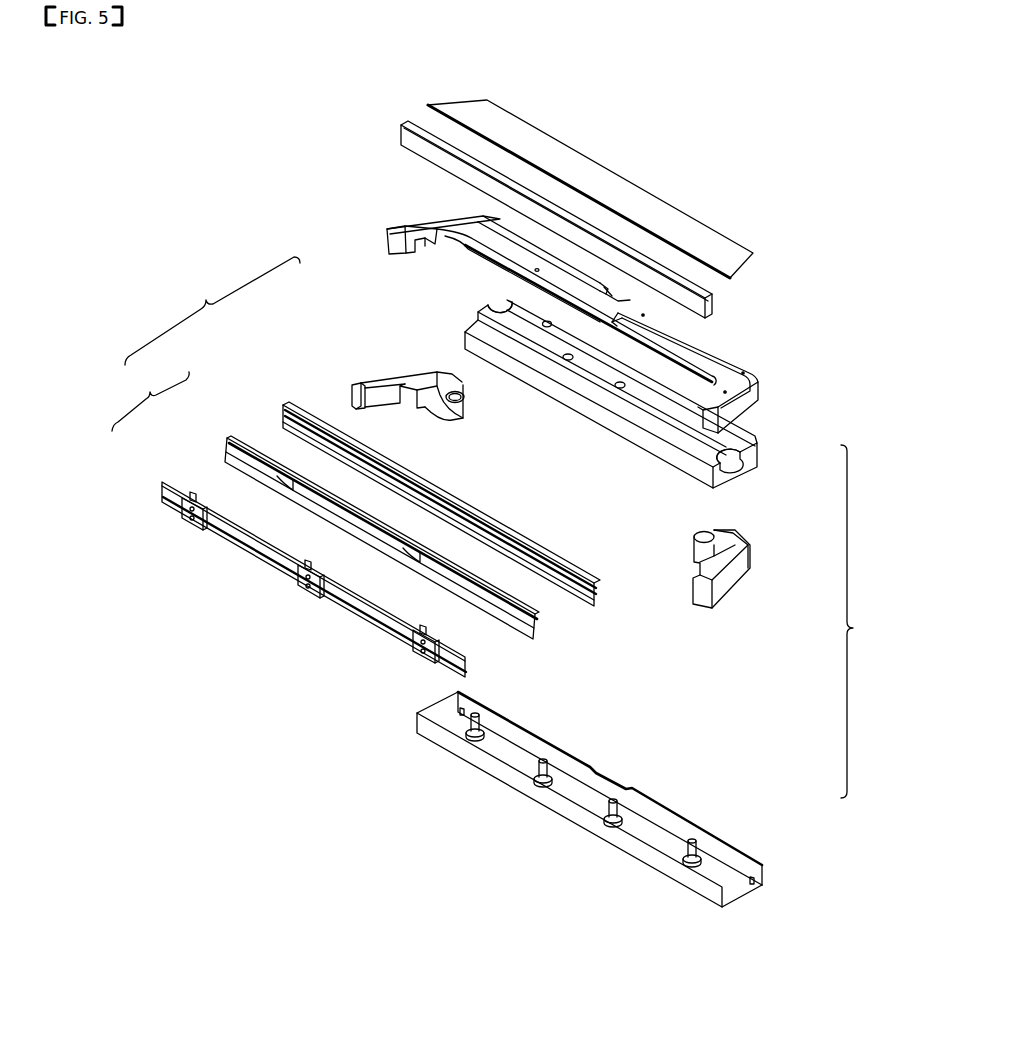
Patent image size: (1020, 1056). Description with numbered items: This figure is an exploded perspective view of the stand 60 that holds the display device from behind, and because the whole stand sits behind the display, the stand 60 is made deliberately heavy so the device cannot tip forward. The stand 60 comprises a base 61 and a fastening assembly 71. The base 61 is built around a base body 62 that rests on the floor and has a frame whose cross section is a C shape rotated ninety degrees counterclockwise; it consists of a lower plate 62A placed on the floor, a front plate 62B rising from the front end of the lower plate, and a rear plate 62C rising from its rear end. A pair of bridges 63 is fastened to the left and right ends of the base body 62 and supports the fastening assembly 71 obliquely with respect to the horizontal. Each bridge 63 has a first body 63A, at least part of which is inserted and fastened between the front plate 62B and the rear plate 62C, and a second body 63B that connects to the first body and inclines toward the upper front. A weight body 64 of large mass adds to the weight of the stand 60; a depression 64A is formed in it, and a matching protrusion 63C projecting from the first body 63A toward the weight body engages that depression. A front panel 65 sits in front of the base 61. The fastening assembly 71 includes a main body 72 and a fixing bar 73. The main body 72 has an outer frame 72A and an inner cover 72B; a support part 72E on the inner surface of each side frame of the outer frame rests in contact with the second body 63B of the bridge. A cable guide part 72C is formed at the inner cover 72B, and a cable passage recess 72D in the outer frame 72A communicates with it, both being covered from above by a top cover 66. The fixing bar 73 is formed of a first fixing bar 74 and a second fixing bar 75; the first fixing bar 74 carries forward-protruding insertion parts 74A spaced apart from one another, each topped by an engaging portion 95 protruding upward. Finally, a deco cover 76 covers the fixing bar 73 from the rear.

The stand 60 is at (187, 97).
The base 61 is at (648, 595).
The base body 62 is at (769, 850).
The lower plate 62A is at (738, 888).
The front plate 62B is at (656, 853).
The rear plate 62C is at (668, 816).
The bridge 63 is at (748, 565).
The first body 63A is at (412, 378).
The second body 63B is at (374, 380).
The protrusion 63C is at (450, 412).
The weight body 64 is at (636, 392).
The depression 64A is at (494, 315).
The front panel 65 is at (712, 304).
The top cover 66 is at (697, 228).
The fastening assembly 71 is at (212, 311).
The main body 72 is at (386, 256).
The outer frame 72A is at (752, 396).
The inner cover 72B is at (712, 361).
The cable guide part 72C is at (535, 268).
The cable passage recess 72D is at (624, 298).
The support part 72E is at (410, 230).
The fixing bar 73 is at (374, 518).
The first fixing bar 74 is at (295, 549).
The insertion part 74A is at (305, 593).
The second fixing bar 75 is at (233, 446).
The deco cover 76 is at (590, 585).
The engaging portion 95 is at (300, 565).